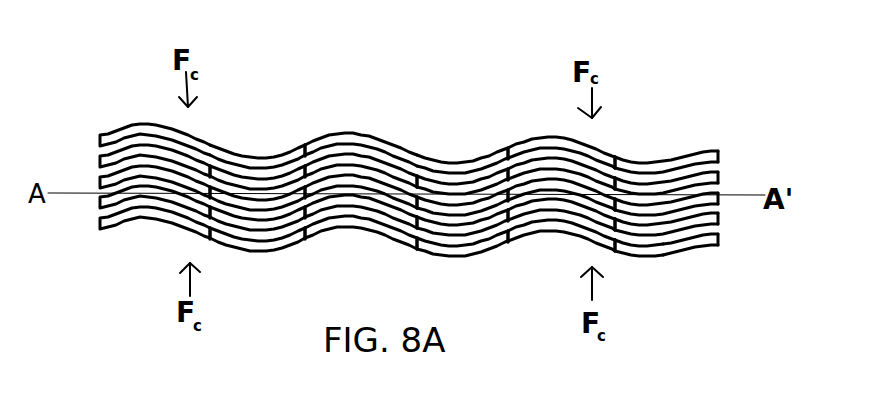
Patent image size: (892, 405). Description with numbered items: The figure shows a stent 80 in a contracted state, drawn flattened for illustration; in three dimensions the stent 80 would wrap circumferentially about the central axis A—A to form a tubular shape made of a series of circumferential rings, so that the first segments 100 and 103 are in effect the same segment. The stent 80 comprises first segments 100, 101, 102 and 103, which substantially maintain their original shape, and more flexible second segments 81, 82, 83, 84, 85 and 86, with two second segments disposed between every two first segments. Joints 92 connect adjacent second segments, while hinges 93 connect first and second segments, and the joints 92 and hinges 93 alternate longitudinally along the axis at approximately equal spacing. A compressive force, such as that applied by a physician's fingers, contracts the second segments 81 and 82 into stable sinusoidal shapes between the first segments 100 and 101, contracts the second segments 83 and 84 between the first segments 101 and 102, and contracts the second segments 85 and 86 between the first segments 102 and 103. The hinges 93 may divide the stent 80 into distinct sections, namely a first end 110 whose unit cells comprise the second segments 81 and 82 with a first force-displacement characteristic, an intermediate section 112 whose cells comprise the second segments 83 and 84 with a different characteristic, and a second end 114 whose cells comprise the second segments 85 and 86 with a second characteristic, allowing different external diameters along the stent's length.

The stent 80 is at (453, 72).
The second segment 81 is at (257, 140).
The second segment 82 is at (250, 175).
The second segment 83 is at (390, 180).
The second segment 84 is at (437, 207).
The second segment 85 is at (640, 258).
The second segment 86 is at (672, 256).
The joint 92 is at (615, 170).
The hinge 93 is at (713, 153).
The first segment 100 is at (207, 142).
The first segment 101 is at (350, 158).
The first segment 102 is at (277, 222).
The first segment 103 is at (475, 258).
The first end 110 is at (127, 243).
The intermediate section 112 is at (408, 253).
The second end 114 is at (702, 260).